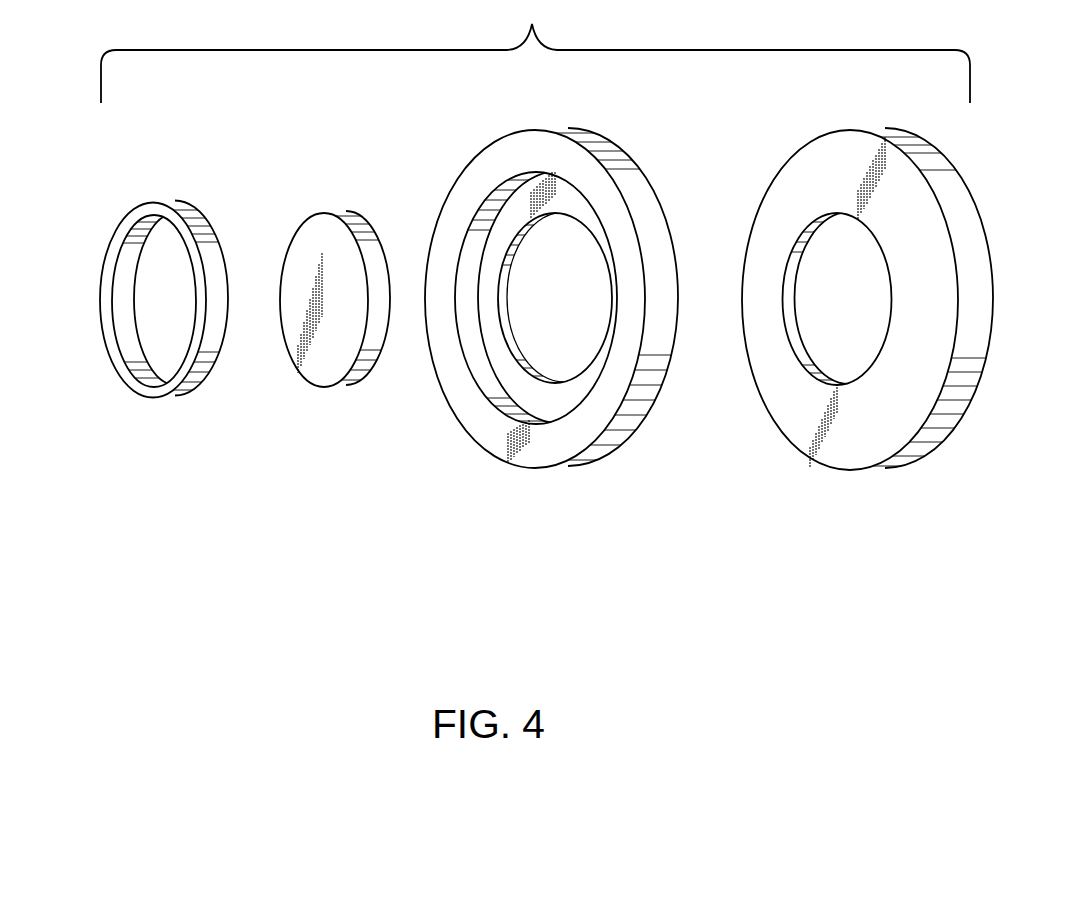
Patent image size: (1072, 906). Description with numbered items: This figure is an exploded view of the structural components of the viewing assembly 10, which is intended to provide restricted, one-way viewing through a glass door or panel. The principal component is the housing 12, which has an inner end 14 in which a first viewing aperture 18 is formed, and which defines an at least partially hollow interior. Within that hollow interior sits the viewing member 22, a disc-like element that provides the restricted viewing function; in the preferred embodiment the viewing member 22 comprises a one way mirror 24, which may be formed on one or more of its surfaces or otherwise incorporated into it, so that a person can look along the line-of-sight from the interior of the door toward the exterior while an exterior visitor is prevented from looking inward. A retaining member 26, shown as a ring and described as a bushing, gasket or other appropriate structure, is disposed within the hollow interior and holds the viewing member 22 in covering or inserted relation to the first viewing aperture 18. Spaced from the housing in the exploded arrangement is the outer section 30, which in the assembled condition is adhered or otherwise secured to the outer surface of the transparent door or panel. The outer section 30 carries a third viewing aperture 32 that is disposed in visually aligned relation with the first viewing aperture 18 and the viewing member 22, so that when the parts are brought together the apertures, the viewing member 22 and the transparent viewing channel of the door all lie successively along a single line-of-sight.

The viewing assembly 10 is at (535, 51).
The housing 12 is at (628, 422).
The inner end 14 is at (548, 397).
The first viewing aperture 18 is at (520, 242).
The viewing member 22 is at (367, 367).
The one way mirror 24 is at (303, 247).
The retaining member 26 is at (202, 373).
The outer section 30 is at (938, 422).
The third viewing aperture 32 is at (795, 240).